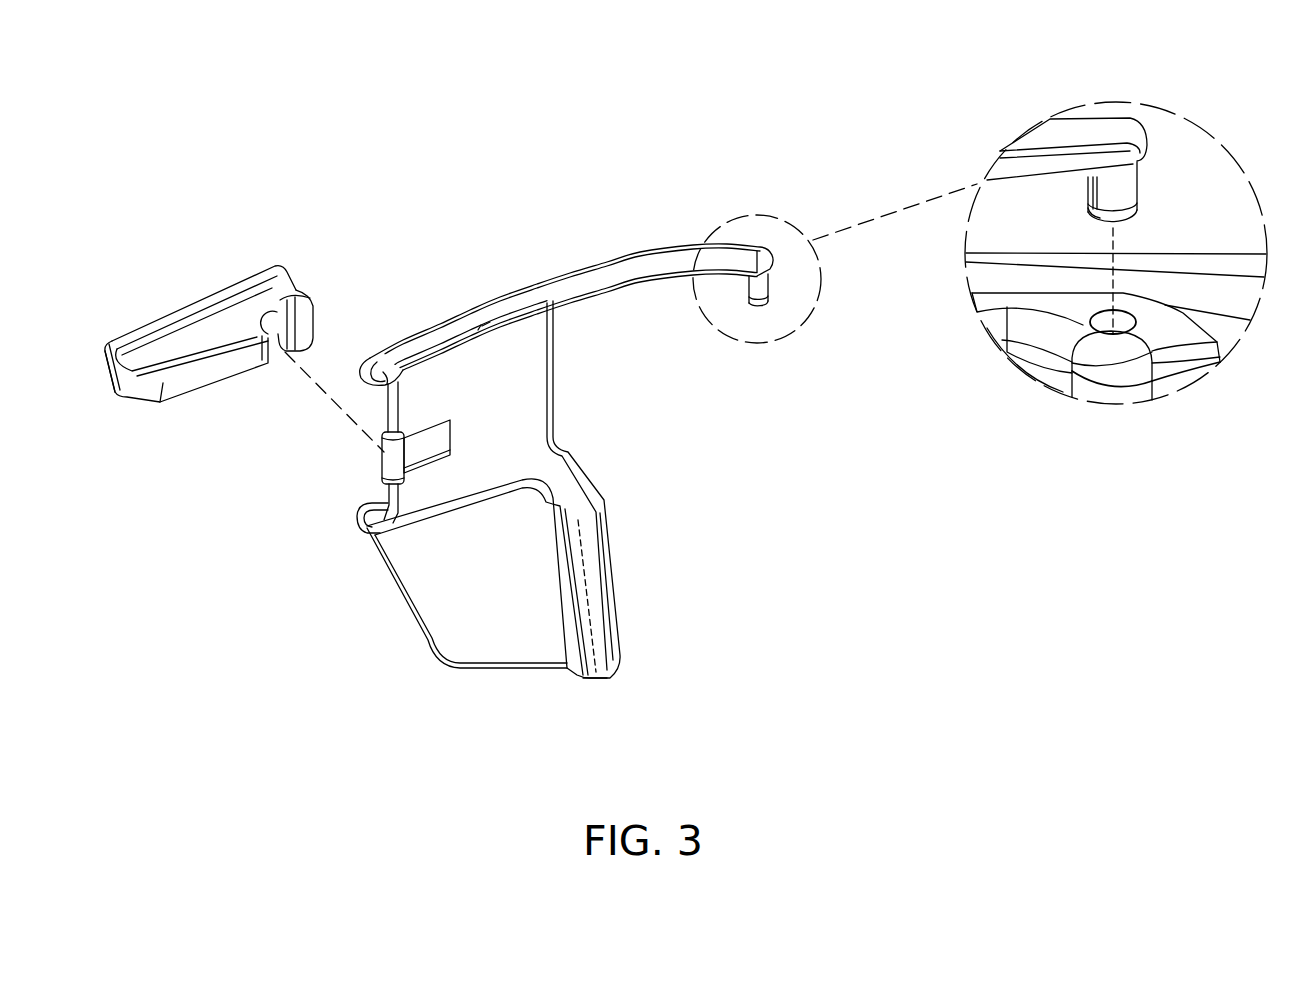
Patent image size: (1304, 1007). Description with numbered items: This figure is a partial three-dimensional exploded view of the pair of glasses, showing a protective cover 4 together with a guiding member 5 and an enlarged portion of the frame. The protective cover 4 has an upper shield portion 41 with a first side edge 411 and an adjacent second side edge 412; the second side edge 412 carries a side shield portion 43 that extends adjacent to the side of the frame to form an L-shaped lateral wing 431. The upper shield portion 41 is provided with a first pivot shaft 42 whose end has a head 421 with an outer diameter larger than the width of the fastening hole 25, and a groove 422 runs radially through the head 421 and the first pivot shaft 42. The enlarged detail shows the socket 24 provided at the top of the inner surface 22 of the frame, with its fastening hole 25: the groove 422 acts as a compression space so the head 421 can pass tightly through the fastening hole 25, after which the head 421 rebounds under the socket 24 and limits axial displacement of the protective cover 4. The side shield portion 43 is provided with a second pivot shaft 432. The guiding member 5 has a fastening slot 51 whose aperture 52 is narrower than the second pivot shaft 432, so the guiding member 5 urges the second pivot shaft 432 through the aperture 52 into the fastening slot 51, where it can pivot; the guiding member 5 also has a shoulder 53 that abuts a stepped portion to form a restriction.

The protective cover 4 is at (627, 251).
The upper shield portion 41 is at (587, 274).
The first side edge 411 is at (687, 252).
The second side edge 412 is at (462, 310).
The first pivot shaft 42 is at (770, 288).
The head 421 is at (1084, 210).
The groove 422 is at (1087, 180).
The side shield portion 43 is at (483, 647).
The L-shaped lateral wing 431 is at (600, 565).
The second pivot shaft 432 is at (390, 465).
The guiding member 5 is at (193, 378).
The fastening slot 51 is at (262, 313).
The aperture 52 is at (283, 321).
The shoulder 53 is at (136, 331).
The inner surface 22 is at (1173, 291).
The socket 24 is at (1098, 343).
The fastening hole 25 is at (1123, 325).